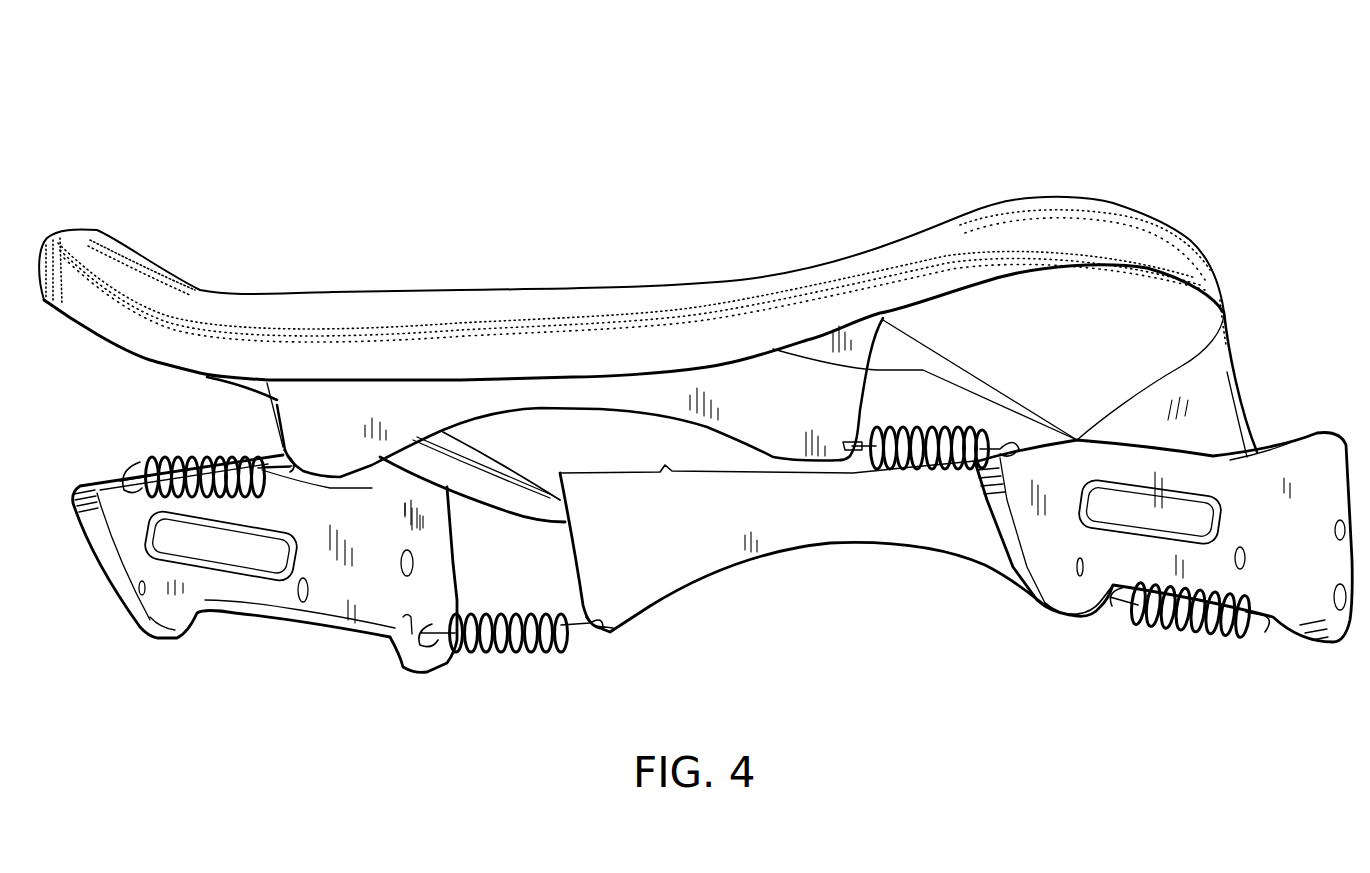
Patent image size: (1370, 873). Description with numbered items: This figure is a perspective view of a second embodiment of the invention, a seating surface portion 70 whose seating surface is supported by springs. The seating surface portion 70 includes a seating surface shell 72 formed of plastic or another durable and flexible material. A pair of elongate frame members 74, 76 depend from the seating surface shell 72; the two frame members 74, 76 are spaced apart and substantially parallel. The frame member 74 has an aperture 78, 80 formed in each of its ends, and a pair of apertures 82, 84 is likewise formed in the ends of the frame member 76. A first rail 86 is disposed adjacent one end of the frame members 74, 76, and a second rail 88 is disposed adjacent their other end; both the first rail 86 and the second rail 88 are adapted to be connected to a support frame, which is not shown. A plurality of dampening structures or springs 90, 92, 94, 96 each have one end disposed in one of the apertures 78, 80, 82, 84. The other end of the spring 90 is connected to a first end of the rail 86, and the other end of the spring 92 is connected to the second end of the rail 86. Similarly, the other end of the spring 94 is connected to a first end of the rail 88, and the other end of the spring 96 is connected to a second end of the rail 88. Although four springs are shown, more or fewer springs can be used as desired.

The seating surface portion 70 is at (1182, 108).
The seating surface shell 72 is at (503, 291).
The frame member 74 is at (290, 408).
The frame member 76 is at (816, 523).
The aperture 78 is at (282, 443).
The aperture 80 is at (838, 470).
The aperture 82 is at (605, 630).
The aperture 84 is at (1104, 610).
The first rail 86 is at (103, 578).
The second rail 88 is at (1338, 438).
The spring 90 is at (163, 460).
The spring 92 is at (927, 477).
The spring 94 is at (520, 648).
The spring 96 is at (1190, 632).